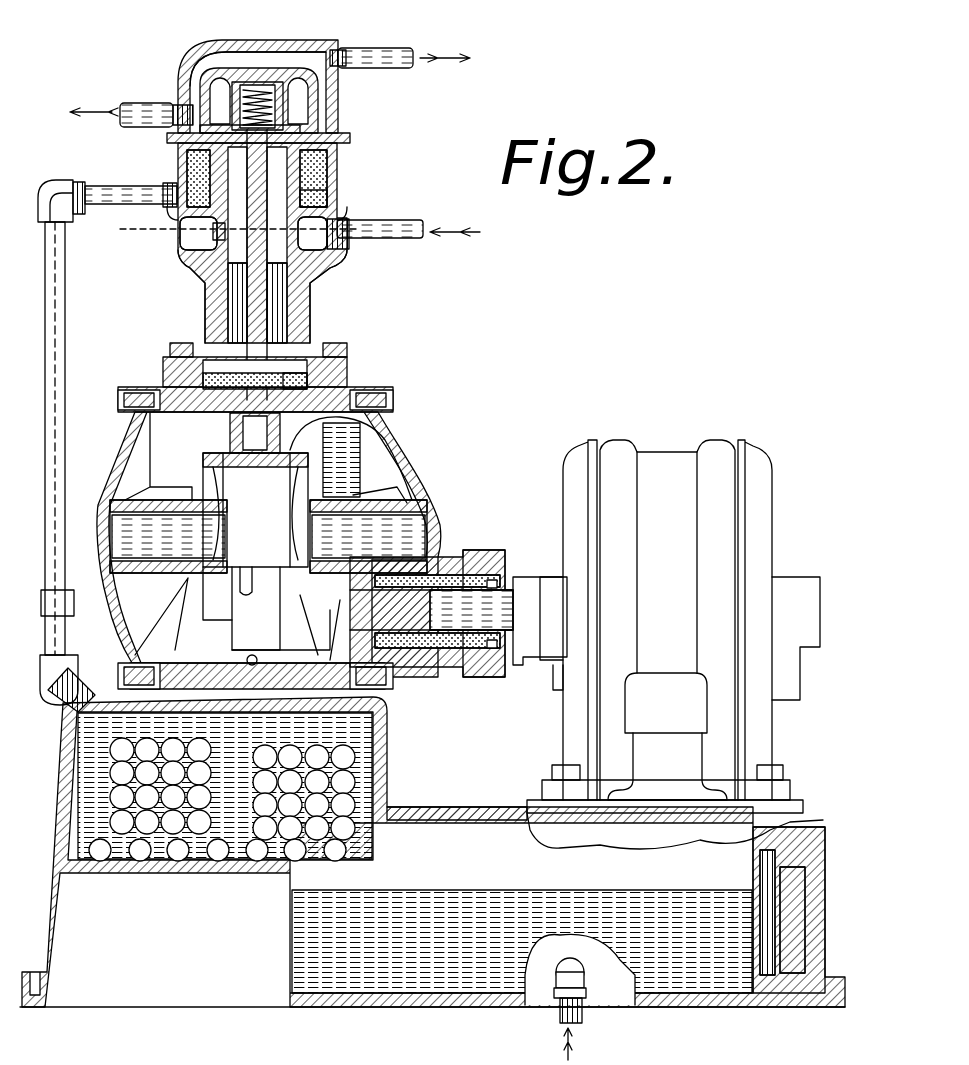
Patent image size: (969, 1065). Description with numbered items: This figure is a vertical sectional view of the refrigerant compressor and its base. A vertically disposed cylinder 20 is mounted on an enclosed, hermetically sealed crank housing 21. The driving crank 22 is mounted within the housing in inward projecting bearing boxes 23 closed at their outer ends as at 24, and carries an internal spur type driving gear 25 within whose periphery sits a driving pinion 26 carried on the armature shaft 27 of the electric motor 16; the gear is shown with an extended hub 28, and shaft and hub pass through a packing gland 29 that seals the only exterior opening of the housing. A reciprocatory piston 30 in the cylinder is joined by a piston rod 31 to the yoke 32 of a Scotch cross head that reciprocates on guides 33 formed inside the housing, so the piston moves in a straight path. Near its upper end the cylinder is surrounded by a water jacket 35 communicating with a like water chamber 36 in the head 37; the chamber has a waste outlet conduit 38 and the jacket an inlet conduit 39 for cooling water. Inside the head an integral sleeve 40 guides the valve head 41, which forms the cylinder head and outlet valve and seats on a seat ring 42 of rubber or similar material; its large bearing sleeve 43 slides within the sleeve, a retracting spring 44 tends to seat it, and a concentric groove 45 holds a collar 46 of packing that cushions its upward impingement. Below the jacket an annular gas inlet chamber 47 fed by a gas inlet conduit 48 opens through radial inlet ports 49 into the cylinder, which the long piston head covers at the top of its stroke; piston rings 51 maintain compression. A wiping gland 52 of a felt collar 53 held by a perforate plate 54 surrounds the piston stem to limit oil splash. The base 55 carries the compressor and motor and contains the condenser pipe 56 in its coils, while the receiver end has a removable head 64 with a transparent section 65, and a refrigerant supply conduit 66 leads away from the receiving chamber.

The electric motor 16 is at (680, 445).
The cylinder 20 is at (300, 275).
The crank housing 21 is at (230, 416).
The driving crank 22 is at (255, 510).
The bearing boxes 23 is at (200, 510).
The closed outer ends 24 is at (104, 530).
The driving gear 25 is at (362, 442).
The driving pinion 26 is at (292, 614).
The armature shaft 27 is at (506, 570).
The extended hub 28 is at (398, 660).
The packing gland 29 is at (468, 660).
The reciprocatory piston 30 is at (338, 166).
The piston rod 31 is at (280, 312).
The yoke 32 is at (238, 582).
The guides 33 is at (256, 606).
The water jacket 35 is at (328, 190).
The water chamber 36 is at (263, 55).
The head 37 is at (257, 73).
The waste outlet conduit 38 is at (400, 50).
The inlet conduit 39 is at (126, 205).
The integral sleeve 40 is at (302, 100).
The valve head 41 is at (302, 129).
The seat ring 42 is at (350, 138).
The bearing sleeve 43 is at (290, 102).
The retracting spring 44 is at (288, 70).
The concentric groove 45 is at (198, 140).
The collar 46 is at (186, 165).
The gas inlet chamber 47 is at (200, 245).
The gas inlet conduit 48 is at (424, 226).
The inlet ports 49 is at (320, 242).
The piston rings 51 is at (330, 184).
The wiping gland 52 is at (290, 388).
The collar 53 is at (180, 366).
The perforate plate 54 is at (240, 390).
The base 55 is at (428, 808).
The condenser pipe 56 is at (72, 776).
The head 64 is at (815, 862).
The transparent section 65 is at (806, 915).
The refrigerant supply conduit 66 is at (583, 1012).